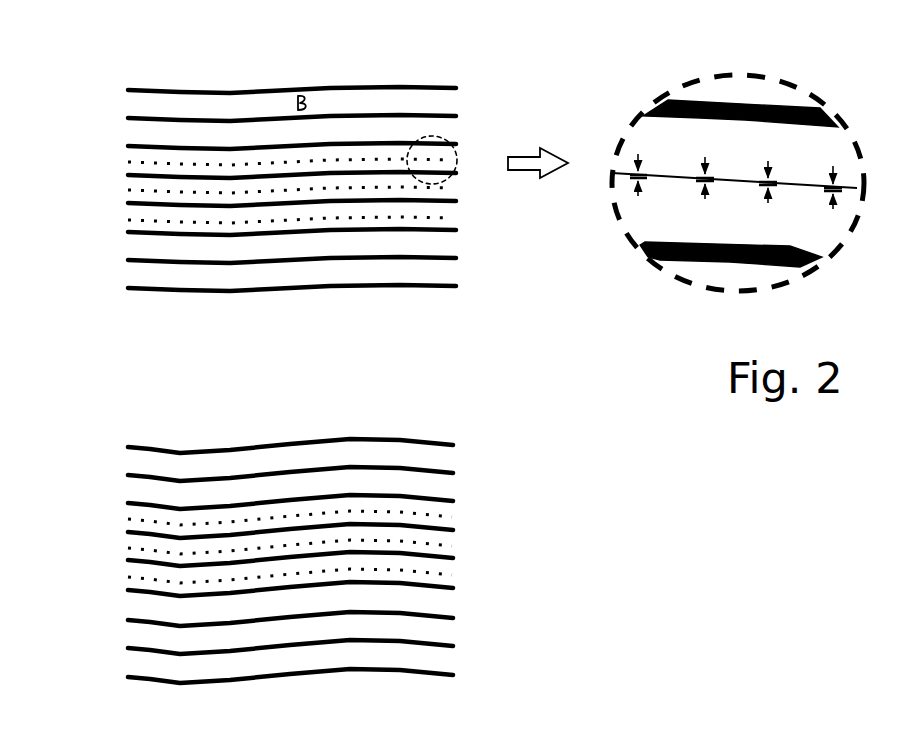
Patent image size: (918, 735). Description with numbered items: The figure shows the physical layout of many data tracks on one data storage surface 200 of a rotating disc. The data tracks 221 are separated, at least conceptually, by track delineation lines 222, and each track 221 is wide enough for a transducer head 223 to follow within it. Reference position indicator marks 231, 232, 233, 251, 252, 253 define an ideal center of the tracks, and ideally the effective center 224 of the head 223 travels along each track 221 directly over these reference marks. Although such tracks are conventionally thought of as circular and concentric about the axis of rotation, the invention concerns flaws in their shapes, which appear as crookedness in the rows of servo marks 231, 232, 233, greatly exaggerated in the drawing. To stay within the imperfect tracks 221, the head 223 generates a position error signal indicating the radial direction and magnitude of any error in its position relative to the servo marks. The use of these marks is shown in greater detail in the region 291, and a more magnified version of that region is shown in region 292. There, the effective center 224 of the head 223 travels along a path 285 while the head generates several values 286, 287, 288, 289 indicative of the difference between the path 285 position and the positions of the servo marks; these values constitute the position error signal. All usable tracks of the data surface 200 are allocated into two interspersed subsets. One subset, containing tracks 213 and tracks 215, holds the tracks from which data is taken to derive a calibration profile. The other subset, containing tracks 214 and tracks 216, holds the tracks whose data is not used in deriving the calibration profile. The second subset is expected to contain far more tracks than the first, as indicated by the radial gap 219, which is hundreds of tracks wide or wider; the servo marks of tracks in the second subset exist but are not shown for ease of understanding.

The data storage surface 200 is at (422, 56).
The tracks 213 is at (288, 182).
The tracks 214 is at (247, 370).
The tracks 215 is at (288, 546).
The tracks 216 is at (113, 590).
The radial gap 219 is at (315, 406).
The data tracks 221 is at (146, 106).
The track delineation lines 222 is at (183, 91).
The transducer head 223 is at (296, 97).
The effective center 224 is at (312, 100).
The reference position indicator mark 231 is at (122, 159).
The reference position indicator mark 232 is at (122, 190).
The reference position indicator mark 233 is at (122, 217).
The reference position indicator mark 251 is at (122, 517).
The reference position indicator mark 252 is at (122, 547).
The reference position indicator mark 253 is at (122, 574).
The path 285 is at (744, 172).
The value 286 is at (639, 198).
The value 287 is at (706, 201).
The value 288 is at (769, 205).
The value 289 is at (831, 168).
The region 291 is at (450, 140).
The region 292 is at (625, 150).